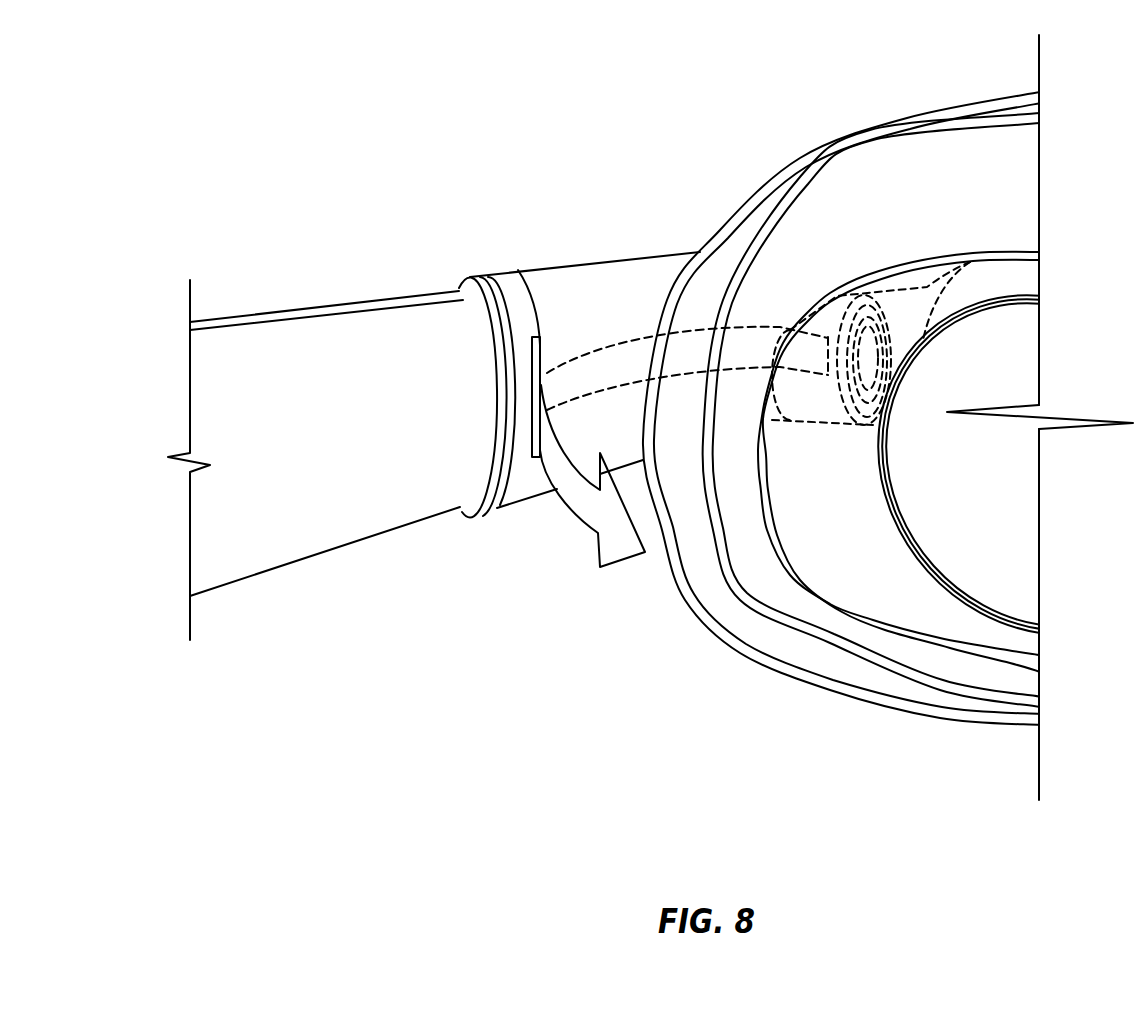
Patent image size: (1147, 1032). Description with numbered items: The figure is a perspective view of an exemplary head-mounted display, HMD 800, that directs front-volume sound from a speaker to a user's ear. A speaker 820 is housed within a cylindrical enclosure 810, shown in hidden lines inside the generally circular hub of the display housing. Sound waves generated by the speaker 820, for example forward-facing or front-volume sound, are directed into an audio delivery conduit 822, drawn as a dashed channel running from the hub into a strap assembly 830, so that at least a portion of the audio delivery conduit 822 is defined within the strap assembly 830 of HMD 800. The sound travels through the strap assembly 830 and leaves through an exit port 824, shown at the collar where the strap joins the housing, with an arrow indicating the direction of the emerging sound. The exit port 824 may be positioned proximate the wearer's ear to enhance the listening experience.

The HMD 800 is at (233, 52).
The cylindrical enclosure 810 is at (922, 293).
The speaker 820 is at (872, 347).
The audio delivery conduit 822 is at (707, 328).
The exit port 824 is at (518, 270).
The strap assembly 830 is at (380, 300).